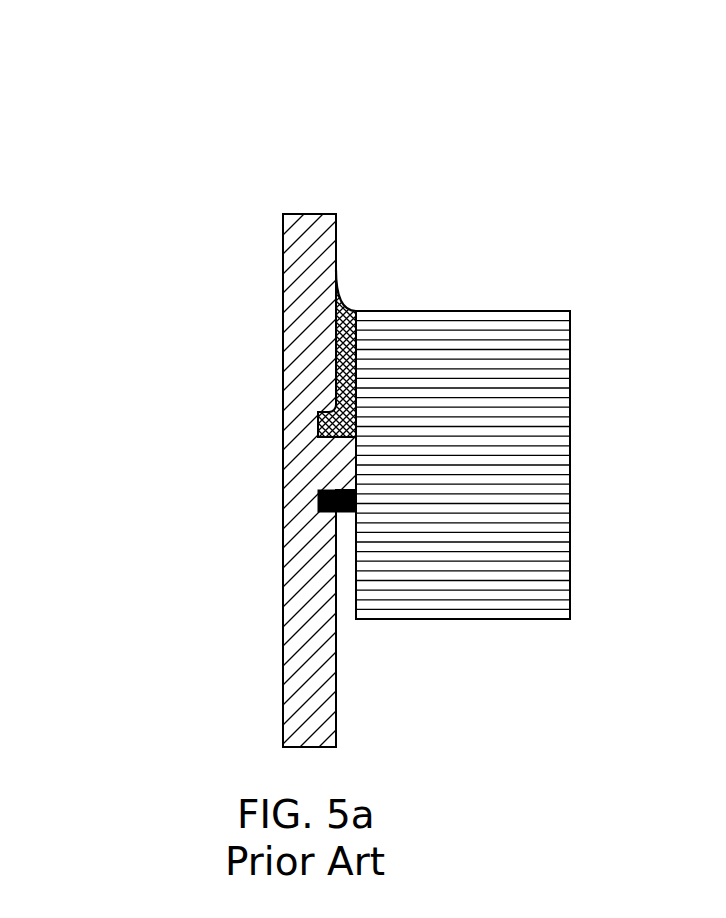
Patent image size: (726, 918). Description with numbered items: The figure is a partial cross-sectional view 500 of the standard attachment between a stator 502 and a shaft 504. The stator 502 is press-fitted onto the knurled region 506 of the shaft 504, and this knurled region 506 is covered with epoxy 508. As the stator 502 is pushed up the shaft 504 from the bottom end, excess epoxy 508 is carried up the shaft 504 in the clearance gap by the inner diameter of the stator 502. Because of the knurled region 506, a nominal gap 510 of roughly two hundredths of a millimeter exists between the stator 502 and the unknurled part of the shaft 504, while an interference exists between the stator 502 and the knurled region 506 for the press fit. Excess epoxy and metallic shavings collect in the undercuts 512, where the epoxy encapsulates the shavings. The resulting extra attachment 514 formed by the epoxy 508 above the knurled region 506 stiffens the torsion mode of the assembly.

The partial cross-sectional view 500 is at (328, 192).
The stator 502 is at (525, 378).
The shaft 504 is at (307, 242).
The knurled region 506 is at (357, 465).
The epoxy 508 is at (338, 363).
The nominal gap 510 is at (343, 552).
The undercuts 512 is at (318, 490).
The extra attachment 514 is at (352, 293).